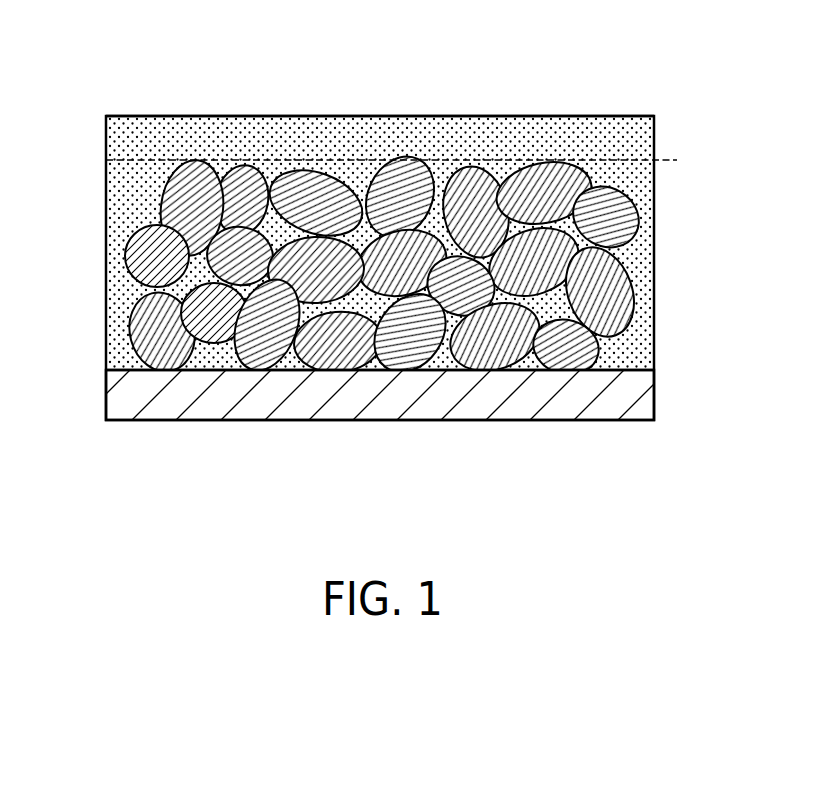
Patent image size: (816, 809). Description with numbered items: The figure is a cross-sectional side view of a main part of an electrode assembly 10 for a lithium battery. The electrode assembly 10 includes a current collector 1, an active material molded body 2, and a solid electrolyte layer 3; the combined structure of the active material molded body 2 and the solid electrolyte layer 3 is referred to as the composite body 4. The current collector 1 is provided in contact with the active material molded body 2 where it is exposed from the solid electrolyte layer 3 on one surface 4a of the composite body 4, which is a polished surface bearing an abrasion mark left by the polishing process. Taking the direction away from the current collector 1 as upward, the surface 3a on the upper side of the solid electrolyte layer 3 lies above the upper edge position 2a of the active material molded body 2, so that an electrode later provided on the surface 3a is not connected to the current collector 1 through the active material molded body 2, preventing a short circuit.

The current collector 1 is at (645, 398).
The active material molded body 2 is at (632, 308).
The solid electrolyte layer 3 is at (643, 232).
The composite body 4 is at (402, 220).
The upper edge position 2a is at (104, 158).
The surface 3a is at (265, 115).
The one surface 4a is at (106, 372).
The electrode assembly 10 is at (397, 212).